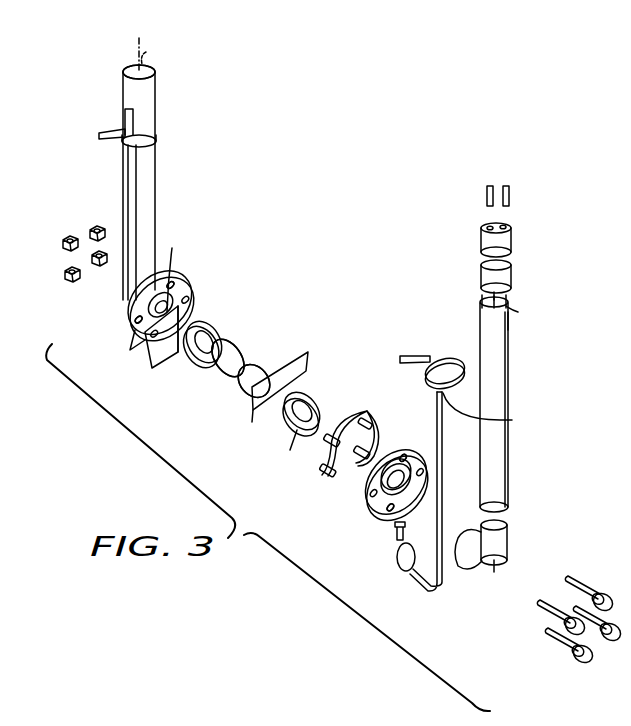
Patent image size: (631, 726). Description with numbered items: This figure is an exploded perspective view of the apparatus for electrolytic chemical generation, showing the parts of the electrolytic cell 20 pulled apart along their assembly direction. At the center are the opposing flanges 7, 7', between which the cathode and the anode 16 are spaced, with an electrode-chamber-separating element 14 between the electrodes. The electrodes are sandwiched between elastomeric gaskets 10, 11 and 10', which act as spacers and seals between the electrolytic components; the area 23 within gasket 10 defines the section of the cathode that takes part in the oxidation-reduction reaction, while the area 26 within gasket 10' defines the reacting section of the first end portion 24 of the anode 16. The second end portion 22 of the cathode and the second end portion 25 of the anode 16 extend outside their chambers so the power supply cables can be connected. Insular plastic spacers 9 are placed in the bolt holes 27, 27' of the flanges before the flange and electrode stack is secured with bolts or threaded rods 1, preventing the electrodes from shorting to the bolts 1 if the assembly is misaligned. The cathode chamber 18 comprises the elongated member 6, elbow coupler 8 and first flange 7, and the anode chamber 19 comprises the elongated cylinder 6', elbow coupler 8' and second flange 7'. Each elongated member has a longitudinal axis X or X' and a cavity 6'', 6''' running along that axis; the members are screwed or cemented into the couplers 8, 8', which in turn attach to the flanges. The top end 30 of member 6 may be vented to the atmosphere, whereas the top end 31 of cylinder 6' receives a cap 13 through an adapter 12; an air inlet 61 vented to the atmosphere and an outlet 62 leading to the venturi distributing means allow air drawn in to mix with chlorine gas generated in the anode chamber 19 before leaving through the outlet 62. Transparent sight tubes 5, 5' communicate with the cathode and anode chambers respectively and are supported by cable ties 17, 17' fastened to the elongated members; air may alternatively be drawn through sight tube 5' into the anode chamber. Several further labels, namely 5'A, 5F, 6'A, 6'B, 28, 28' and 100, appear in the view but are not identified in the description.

The bolts or threaded rods 1 is at (558, 640).
The sight tube 5 is at (615, 112).
The sight tube 5' is at (426, 522).
The wire 5'A is at (506, 415).
The hook end of rod 5F is at (402, 586).
The elongated member 6 is at (168, 182).
The elongated member 6' is at (536, 407).
The cavity 6'' is at (171, 52).
The cavity 6''' is at (527, 291).
The tube lower coupling 6'A is at (514, 507).
The tube portion 6'B is at (534, 340).
The first flange 7 is at (139, 309).
The second flange 7' is at (392, 505).
The elbow coupler 8 is at (95, 281).
The elbow coupler 8' is at (487, 586).
The insular plastic spacers 9 is at (373, 400).
The gasket 10 is at (220, 300).
The gasket 10' is at (317, 406).
The gasket 11 is at (227, 332).
The adapter 12 is at (512, 276).
The cap or plug 13 is at (513, 247).
The electrode-chamber-separating element 14 is at (241, 338).
The anode 16 is at (306, 351).
The cable tie 17 is at (109, 113).
The cable tie 17' is at (432, 348).
The cathode chamber 18 is at (181, 133).
The anode chamber 19 is at (348, 523).
The electrolytic cell 20 is at (226, 415).
The second end portion 22 is at (150, 360).
The area within gasket 10 23 is at (176, 360).
The first end portion 24 is at (262, 410).
The second end portion 25 is at (306, 366).
The area within gasket 10' 26 is at (290, 450).
The bolt holes 27 is at (158, 313).
The bolt holes 27' is at (364, 465).
The bolt 28 is at (187, 263).
The bolt 28' is at (387, 547).
The top end 30 is at (128, 62).
The top end 31 is at (512, 308).
The air inlet 61 is at (488, 182).
The outlet 62 is at (511, 184).
The assembly 100 is at (317, 130).
The longitudinal axis X is at (158, 35).
The longitudinal axis X' is at (499, 397).